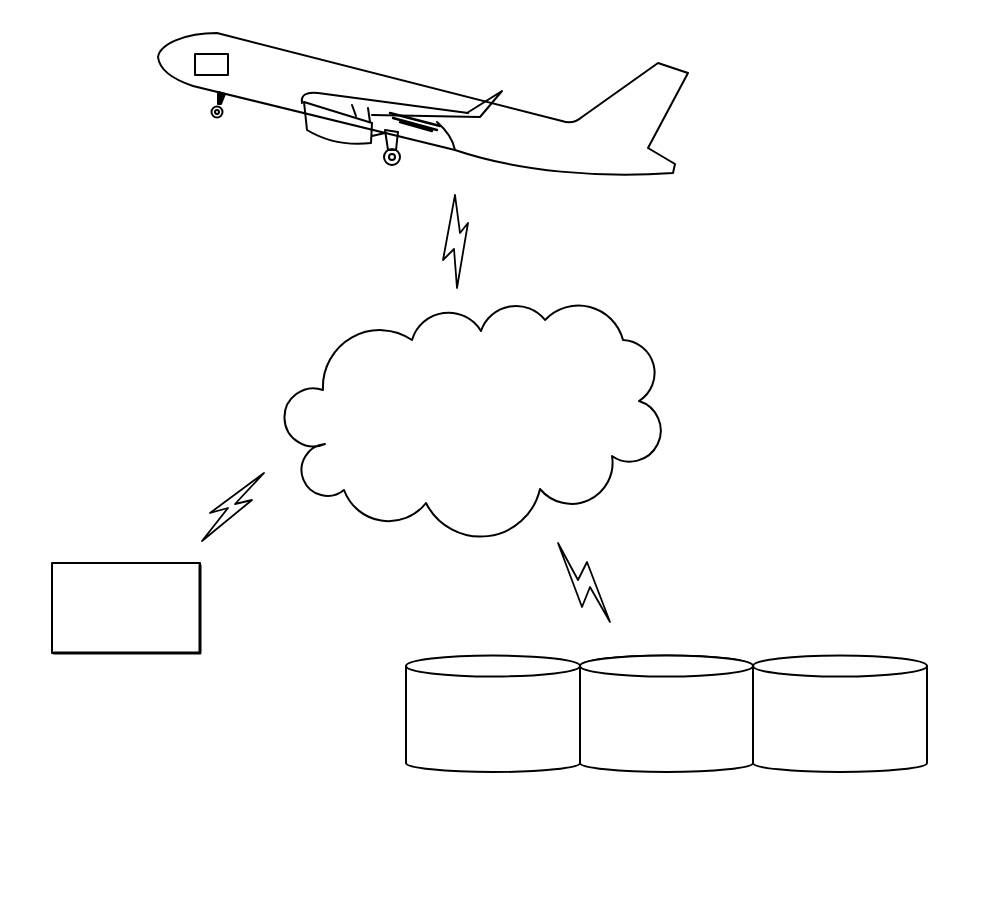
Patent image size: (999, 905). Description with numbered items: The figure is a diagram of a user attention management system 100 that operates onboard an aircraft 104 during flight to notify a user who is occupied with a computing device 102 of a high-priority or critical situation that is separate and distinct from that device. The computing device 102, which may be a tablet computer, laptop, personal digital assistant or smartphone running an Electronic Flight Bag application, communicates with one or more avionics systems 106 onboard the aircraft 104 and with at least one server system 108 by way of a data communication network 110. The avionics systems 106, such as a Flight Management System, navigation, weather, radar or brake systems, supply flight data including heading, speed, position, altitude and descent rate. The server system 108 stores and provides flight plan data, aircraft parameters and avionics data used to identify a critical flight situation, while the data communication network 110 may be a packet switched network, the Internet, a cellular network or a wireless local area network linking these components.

The user attention management system 100 is at (910, 226).
The computing device 102 is at (122, 563).
The aircraft 104 is at (678, 98).
The avionics systems 106 is at (195, 87).
The server system 108 is at (683, 657).
The data communication network 110 is at (490, 478).